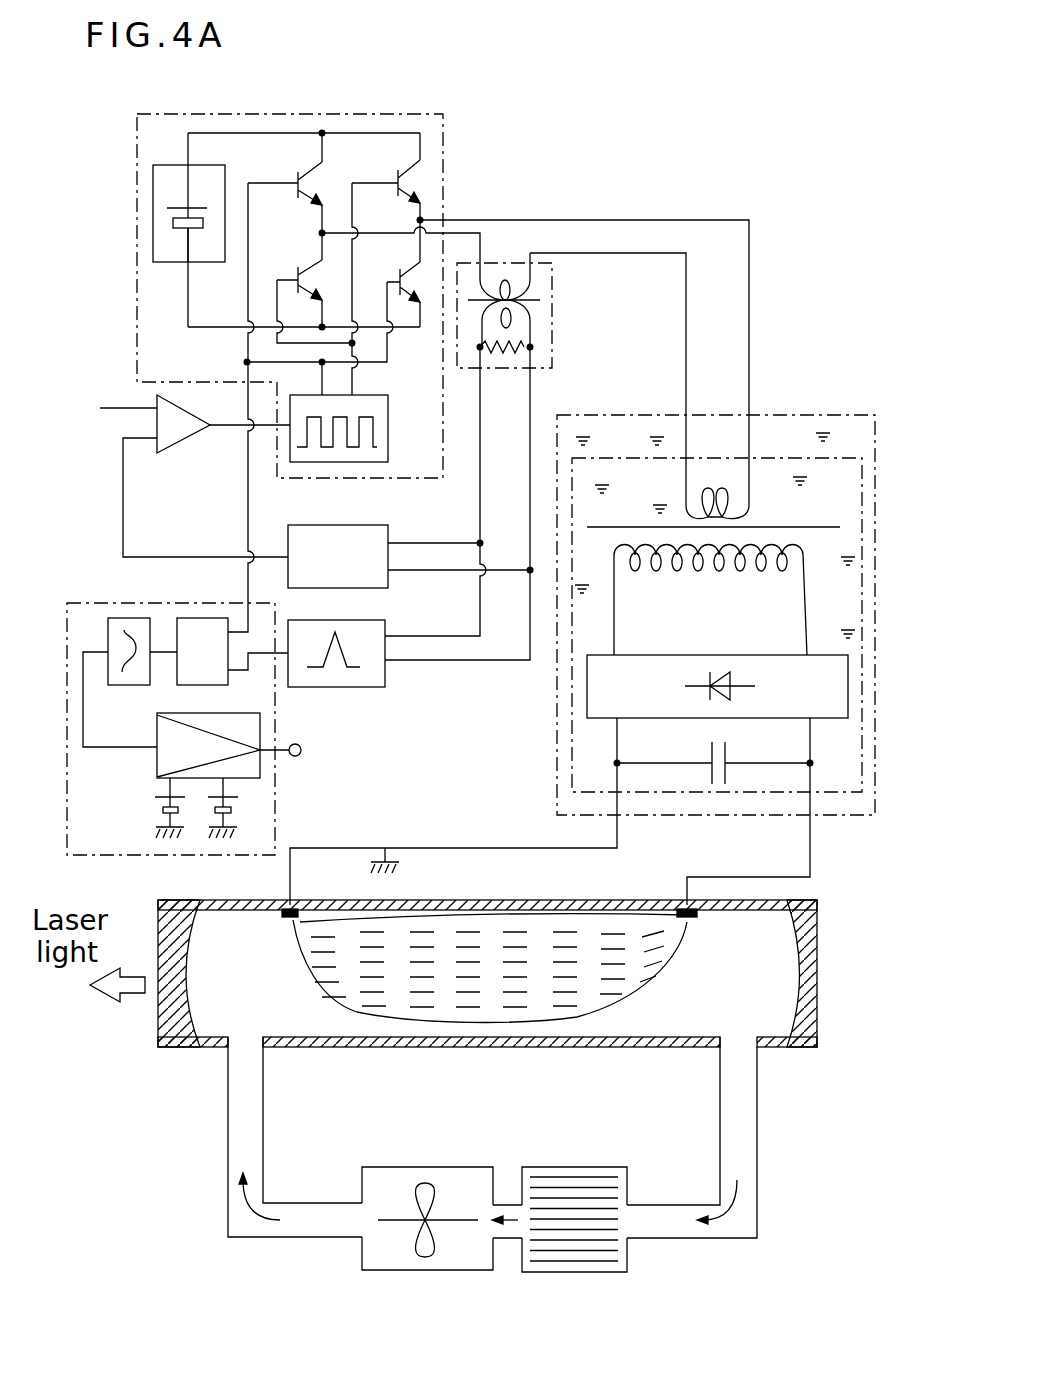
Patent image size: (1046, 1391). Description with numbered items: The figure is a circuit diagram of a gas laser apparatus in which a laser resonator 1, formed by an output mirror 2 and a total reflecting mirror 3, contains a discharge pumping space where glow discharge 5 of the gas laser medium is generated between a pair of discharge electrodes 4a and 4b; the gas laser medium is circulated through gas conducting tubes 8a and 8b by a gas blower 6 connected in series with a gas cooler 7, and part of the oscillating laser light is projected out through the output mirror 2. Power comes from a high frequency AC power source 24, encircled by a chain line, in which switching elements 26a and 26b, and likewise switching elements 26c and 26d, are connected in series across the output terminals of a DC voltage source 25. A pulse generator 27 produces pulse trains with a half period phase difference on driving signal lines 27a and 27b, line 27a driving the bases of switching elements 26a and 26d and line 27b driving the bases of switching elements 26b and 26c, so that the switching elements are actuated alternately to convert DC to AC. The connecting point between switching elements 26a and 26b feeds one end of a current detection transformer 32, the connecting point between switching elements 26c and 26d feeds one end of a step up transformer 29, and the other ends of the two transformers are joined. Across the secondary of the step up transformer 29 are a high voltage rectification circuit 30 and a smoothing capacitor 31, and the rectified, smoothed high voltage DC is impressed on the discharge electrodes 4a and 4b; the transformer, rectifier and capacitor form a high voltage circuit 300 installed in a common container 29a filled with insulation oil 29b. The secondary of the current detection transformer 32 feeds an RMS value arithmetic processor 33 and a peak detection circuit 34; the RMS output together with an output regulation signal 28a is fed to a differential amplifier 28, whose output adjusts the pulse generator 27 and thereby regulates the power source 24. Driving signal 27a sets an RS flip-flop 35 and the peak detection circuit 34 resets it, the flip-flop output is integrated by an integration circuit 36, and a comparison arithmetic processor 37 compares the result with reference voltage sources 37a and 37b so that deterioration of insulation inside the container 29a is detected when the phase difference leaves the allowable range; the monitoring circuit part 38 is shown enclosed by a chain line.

The laser resonator 1 is at (456, 898).
The output mirror 2 is at (187, 1030).
The total reflecting mirror 3 is at (792, 1035).
The discharge electrode 4a is at (680, 908).
The discharge electrode 4b is at (293, 907).
The glow discharge 5 is at (497, 1003).
The gas blower 6 is at (410, 1167).
The gas cooler 7 is at (573, 1167).
The gas conducting tube 8a is at (263, 1143).
The gas conducting tube 8b is at (680, 1205).
The high frequency AC power source 24 is at (137, 122).
The DC voltage source 25 is at (153, 177).
The switching element 26a is at (298, 172).
The switching element 26b is at (298, 270).
The switching element 26c is at (410, 175).
The switching element 26d is at (417, 272).
The pulse generator 27 is at (388, 437).
The driving signal line 27a is at (320, 376).
The driving signal line 27b is at (358, 383).
The differential amplifier 28 is at (183, 440).
The output regulation signal 28a is at (118, 407).
The step up transformer 29 is at (755, 490).
The container 29a is at (823, 415).
The insulation oil 29b is at (623, 445).
The high voltage rectification circuit 30 is at (833, 722).
The smoothing capacitor 31 is at (727, 773).
The current detection transformer 32 is at (552, 298).
The RMS value arithmetic processor 33 is at (388, 585).
The peak detection circuit 34 is at (385, 680).
The RS flip-flop 35 is at (208, 618).
The integration circuit 36 is at (130, 618).
The comparison arithmetic processor 37 is at (260, 735).
The reference voltage source 37a is at (163, 810).
The reference voltage source 37b is at (232, 810).
The protection circuit 38 is at (275, 785).
The high voltage circuit 300 is at (843, 483).